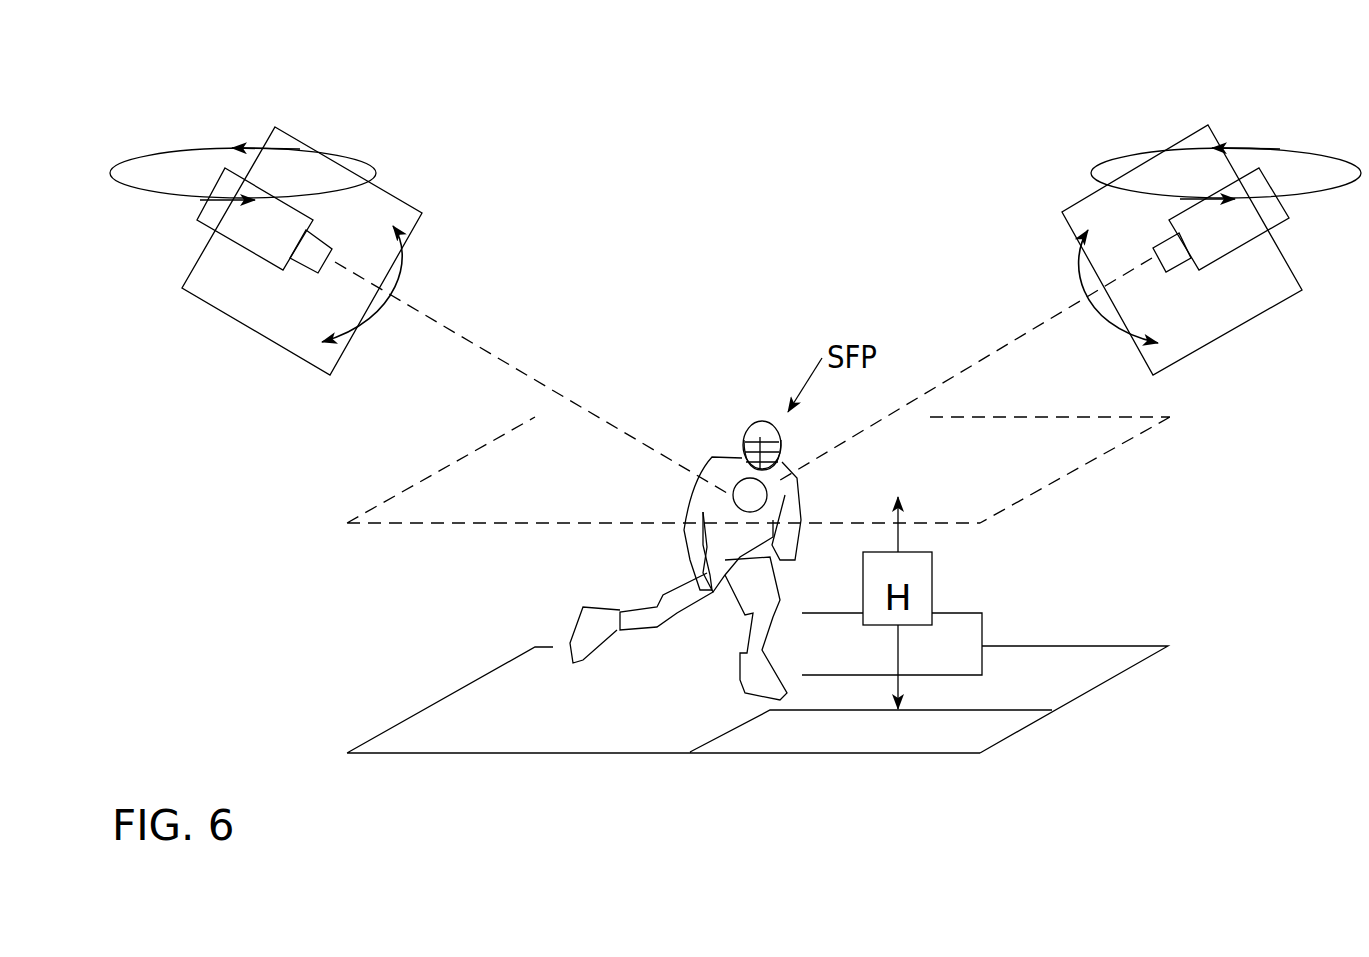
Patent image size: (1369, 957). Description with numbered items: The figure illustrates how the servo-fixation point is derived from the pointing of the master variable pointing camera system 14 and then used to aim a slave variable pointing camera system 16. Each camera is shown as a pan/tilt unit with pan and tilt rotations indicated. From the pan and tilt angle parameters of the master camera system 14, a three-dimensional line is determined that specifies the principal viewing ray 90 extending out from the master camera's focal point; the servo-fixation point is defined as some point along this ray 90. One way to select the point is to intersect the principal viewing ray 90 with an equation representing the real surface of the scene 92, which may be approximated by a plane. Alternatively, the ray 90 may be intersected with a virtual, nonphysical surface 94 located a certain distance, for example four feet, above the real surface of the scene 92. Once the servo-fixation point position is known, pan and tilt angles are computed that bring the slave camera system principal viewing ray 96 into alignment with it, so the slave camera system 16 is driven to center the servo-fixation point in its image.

The master variable pointing camera system 14 is at (358, 132).
The slave variable pointing camera system 16 is at (1283, 135).
The principal viewing ray of the master camera system 90 is at (503, 355).
The slave camera system principal viewing ray 96 is at (990, 350).
The virtual surface 94 is at (1108, 473).
The real surface of the scene 92 is at (915, 757).